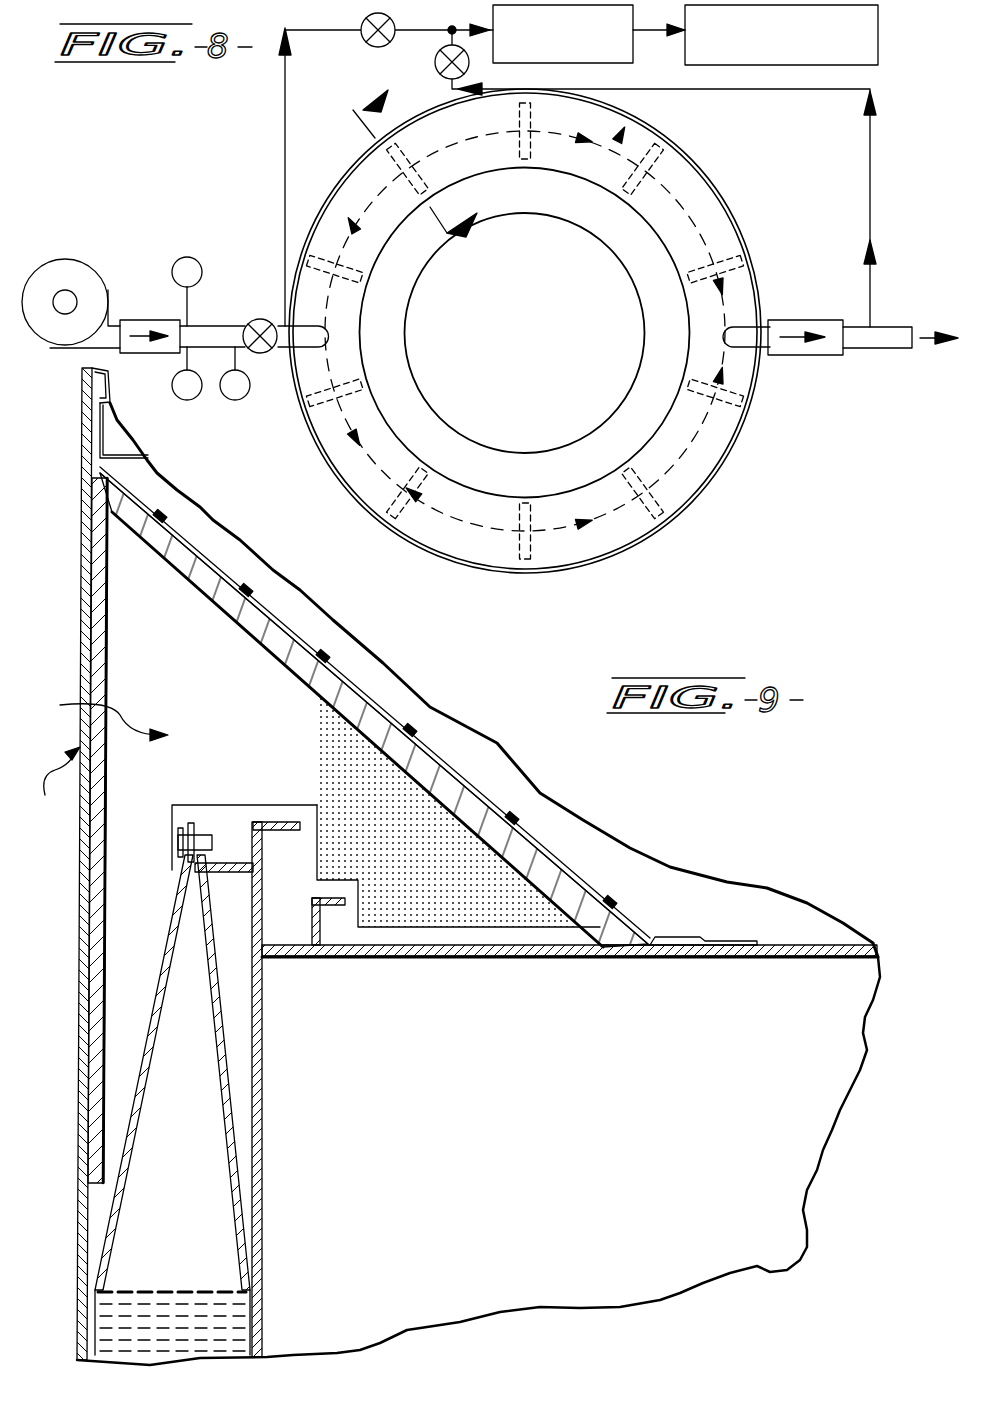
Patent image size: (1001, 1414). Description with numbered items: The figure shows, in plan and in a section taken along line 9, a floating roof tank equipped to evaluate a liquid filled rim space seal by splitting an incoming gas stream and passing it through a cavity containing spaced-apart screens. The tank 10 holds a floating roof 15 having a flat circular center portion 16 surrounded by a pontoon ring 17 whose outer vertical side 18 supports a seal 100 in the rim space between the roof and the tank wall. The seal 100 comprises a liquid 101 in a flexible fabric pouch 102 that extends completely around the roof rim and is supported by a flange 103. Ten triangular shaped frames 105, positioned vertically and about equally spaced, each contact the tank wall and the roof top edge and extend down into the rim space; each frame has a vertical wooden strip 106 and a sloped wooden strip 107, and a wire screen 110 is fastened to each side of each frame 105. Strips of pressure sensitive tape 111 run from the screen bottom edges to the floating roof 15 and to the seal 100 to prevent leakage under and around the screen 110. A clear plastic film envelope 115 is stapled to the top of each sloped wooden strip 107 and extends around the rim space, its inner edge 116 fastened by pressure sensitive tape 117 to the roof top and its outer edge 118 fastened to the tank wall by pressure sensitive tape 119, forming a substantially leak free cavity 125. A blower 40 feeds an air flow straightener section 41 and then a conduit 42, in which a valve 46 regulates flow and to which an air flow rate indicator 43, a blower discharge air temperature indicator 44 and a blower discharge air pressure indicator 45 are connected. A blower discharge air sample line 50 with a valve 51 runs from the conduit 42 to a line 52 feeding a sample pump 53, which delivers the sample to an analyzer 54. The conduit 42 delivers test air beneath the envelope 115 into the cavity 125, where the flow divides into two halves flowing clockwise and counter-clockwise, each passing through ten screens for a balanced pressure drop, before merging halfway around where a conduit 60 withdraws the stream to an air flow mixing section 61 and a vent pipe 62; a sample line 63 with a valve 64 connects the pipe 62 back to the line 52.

In FIG. 8, the section line 9 is at (407, 175).
In FIG. 9, the tank 10 is at (51, 780).
In FIG. 9, the floating roof 15 is at (768, 900).
In FIG. 8, the center portion 16 is at (517, 355).
In FIG. 8, the pontoon ring 17 is at (513, 203).
In FIG. 9, the pontoon ring 17 is at (820, 945).
In FIG. 9, the outer vertical side 18 is at (262, 975).
In FIG. 8, the blower 40 is at (65, 259).
In FIG. 8, the air flow straightener section 41 is at (135, 318).
In FIG. 8, the conduit 42 is at (205, 322).
In FIG. 8, the air flow rate indicator 43 is at (178, 258).
In FIG. 8, the blower discharge air temperature indicator 44 is at (180, 397).
In FIG. 8, the blower discharge air pressure indicator 45 is at (230, 400).
In FIG. 8, the valve 46 is at (258, 318).
In FIG. 8, the blower discharge air sample line 50 is at (283, 112).
In FIG. 8, the valve 51 is at (360, 40).
In FIG. 8, the line 52 is at (455, 26).
In FIG. 8, the sample pump 53 is at (622, 48).
In FIG. 8, the analyzer 54 is at (872, 40).
In FIG. 8, the conduit 60 is at (760, 330).
In FIG. 8, the air flow mixing section 61 is at (800, 357).
In FIG. 8, the pipe 62 is at (880, 350).
In FIG. 8, the sample line 63 is at (445, 42).
In FIG. 8, the valve 64 is at (445, 75).
In FIG. 9, the seal 100 is at (255, 1105).
In FIG. 9, the liquid 101 is at (238, 1322).
In FIG. 9, the flexible fabric pouch 102 is at (208, 1055).
In FIG. 9, the flange 103 is at (200, 823).
In FIG. 8, the triangular shaped frame 105 is at (660, 170).
In FIG. 9, the triangular shaped frame 105 is at (388, 668).
In FIG. 9, the vertical wooden strip 106 is at (98, 600).
In FIG. 9, the sloped wooden strip 107 is at (457, 767).
In FIG. 9, the wire screen 110 is at (180, 590).
In FIG. 9, the pressure sensitive tape 111 is at (238, 832).
In FIG. 8, the clear plastic film envelope 115 is at (700, 478).
In FIG. 9, the clear plastic film envelope 115 is at (392, 715).
In FIG. 9, the inner edge 116 is at (677, 957).
In FIG. 9, the pressure sensitive tape 117 is at (670, 935).
In FIG. 9, the outer edge 118 is at (92, 440).
In FIG. 9, the pressure sensitive tape 119 is at (108, 400).
In FIG. 8, the cavity 125 is at (420, 535).
In FIG. 9, the cavity 125 is at (94, 717).